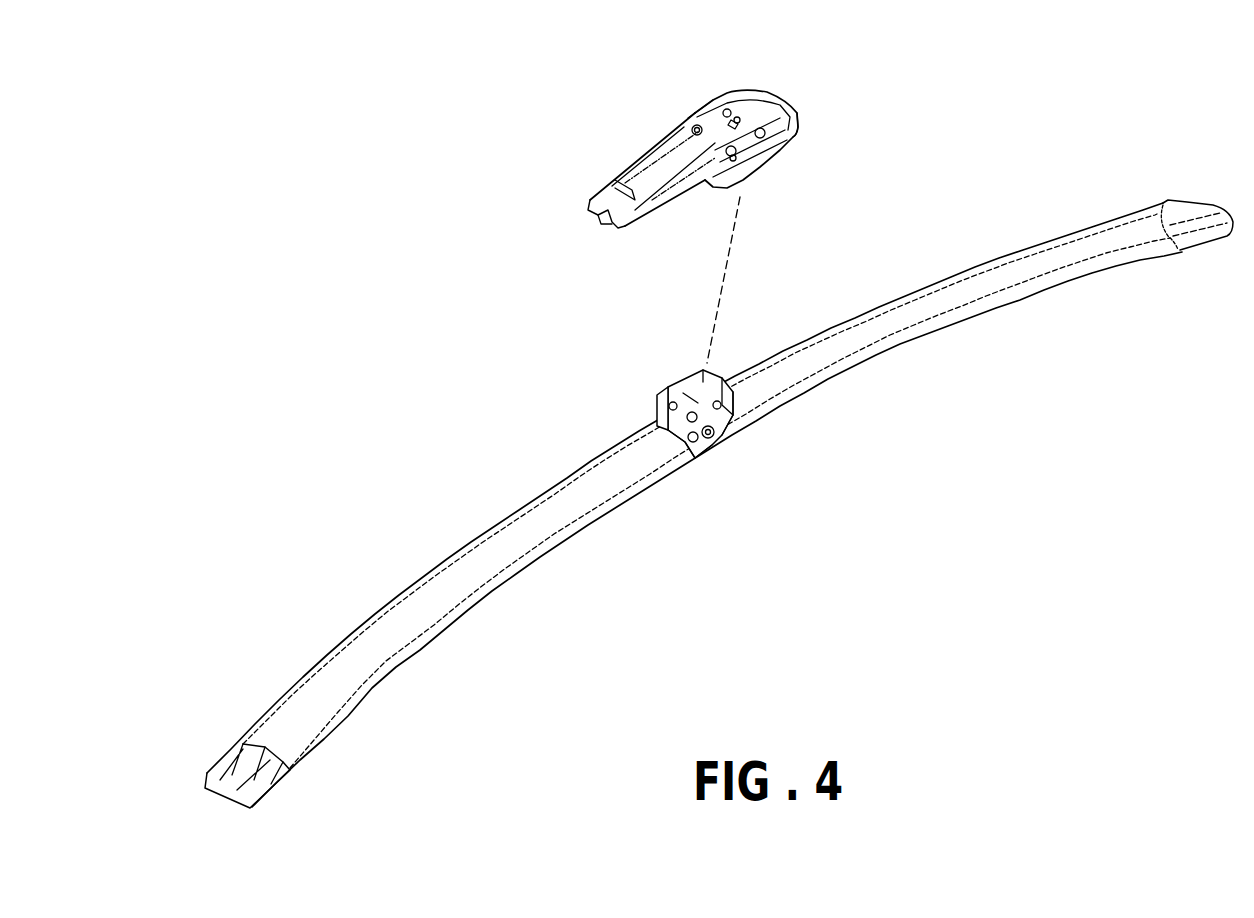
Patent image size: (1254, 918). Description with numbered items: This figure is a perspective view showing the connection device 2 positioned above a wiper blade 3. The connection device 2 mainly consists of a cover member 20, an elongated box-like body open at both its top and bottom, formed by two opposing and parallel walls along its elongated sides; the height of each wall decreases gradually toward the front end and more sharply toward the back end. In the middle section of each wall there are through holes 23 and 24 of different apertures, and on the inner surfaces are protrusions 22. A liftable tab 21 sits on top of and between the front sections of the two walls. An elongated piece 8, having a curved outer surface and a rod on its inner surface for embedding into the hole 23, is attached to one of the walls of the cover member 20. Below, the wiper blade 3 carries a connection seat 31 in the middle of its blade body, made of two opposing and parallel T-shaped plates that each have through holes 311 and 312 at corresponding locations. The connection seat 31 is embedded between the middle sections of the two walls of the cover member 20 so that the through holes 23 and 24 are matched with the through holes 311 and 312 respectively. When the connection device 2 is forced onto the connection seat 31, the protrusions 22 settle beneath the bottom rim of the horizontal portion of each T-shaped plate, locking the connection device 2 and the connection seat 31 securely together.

The connection device 2 is at (660, 131).
The cover member 20 is at (635, 159).
The liftable tab 21 is at (624, 177).
The protrusions 22 is at (737, 117).
The through hole 23 is at (742, 162).
The through hole 24 is at (797, 140).
The elongated piece 8 is at (692, 110).
The wiper blade 3 is at (537, 495).
The connection seat 31 is at (667, 390).
The through hole 311 is at (677, 440).
The through hole 312 is at (737, 427).